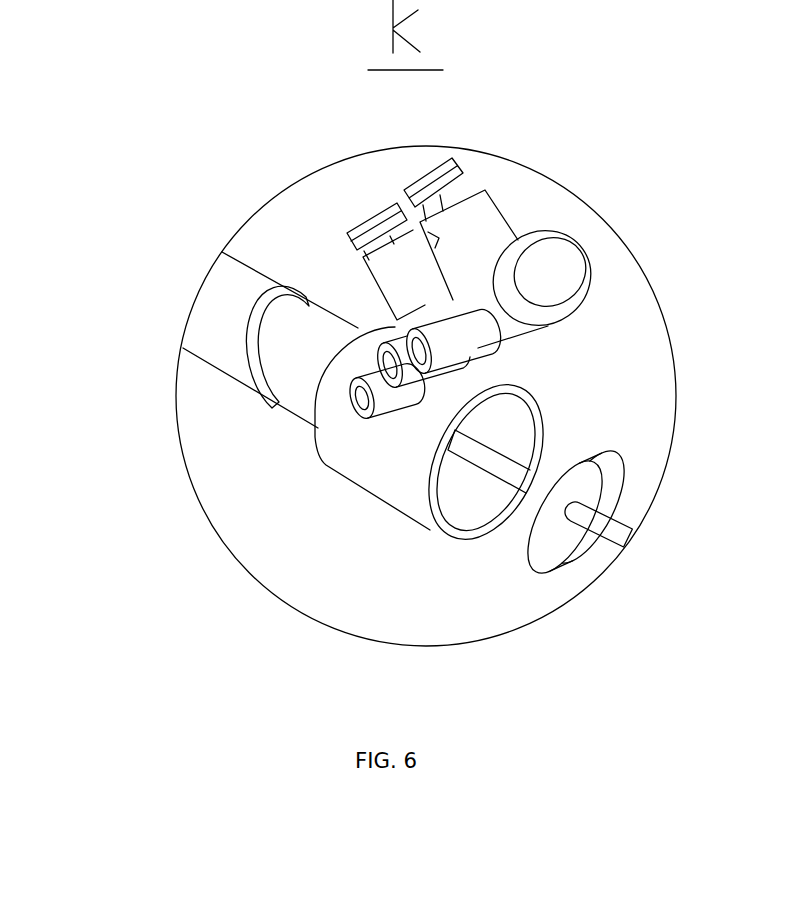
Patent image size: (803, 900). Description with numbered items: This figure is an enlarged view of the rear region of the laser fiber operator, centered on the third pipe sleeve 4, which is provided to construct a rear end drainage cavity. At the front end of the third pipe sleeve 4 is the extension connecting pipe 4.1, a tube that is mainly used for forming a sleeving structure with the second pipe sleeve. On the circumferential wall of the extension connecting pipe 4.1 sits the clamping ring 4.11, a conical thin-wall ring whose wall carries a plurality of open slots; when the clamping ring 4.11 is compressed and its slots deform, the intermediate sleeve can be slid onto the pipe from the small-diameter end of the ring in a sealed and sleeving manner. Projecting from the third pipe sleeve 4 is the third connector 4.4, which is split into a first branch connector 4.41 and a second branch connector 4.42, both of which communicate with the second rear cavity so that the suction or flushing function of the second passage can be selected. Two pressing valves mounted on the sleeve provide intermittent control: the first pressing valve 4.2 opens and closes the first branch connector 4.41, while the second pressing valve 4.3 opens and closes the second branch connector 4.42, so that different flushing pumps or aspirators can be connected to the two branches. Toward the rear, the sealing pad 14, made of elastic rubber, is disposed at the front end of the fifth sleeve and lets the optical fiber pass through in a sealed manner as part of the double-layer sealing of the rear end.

The third pipe sleeve 4 is at (418, 501).
The extension connecting pipe 4.1 is at (217, 335).
The clamping ring 4.11 is at (252, 373).
The first pressing valve 4.2 is at (373, 223).
The second pressing valve 4.3 is at (467, 217).
The third connector 4.4 is at (321, 405).
The first branch connector 4.41 is at (363, 413).
The second branch connector 4.42 is at (430, 353).
The sealing pad 14 is at (570, 560).